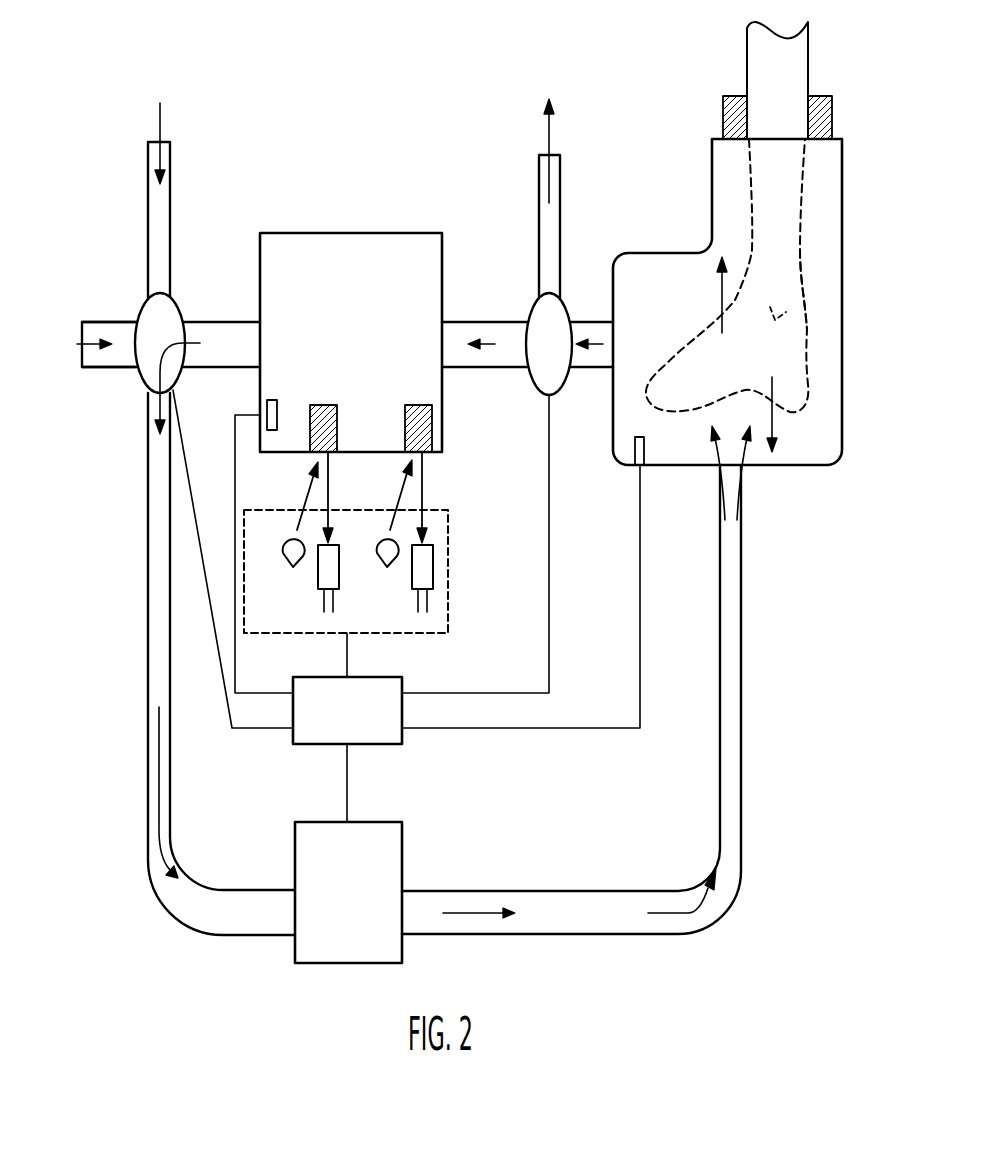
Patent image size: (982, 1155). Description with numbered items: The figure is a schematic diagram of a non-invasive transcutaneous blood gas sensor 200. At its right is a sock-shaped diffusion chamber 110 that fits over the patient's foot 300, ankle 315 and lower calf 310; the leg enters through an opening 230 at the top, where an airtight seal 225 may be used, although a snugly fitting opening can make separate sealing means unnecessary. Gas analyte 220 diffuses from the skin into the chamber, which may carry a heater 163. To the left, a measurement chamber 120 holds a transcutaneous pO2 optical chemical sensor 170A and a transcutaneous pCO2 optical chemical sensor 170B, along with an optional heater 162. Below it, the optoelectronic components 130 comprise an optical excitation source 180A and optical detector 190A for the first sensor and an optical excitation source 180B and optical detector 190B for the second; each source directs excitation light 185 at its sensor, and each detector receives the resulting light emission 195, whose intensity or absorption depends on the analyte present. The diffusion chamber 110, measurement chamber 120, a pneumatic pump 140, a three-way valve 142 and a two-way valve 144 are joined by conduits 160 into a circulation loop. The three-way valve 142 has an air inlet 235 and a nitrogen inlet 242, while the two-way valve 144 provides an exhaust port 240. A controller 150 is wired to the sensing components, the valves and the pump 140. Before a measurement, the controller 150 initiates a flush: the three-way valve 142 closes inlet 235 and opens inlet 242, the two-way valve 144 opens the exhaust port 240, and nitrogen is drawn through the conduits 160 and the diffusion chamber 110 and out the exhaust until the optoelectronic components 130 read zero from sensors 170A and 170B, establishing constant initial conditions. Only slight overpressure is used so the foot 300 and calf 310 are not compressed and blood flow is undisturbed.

The non-invasive transcutaneous blood gas sensor 200 is at (311, 62).
The diffusion chamber 110 is at (798, 465).
The measurement chamber 120 is at (410, 233).
The optoelectronic components 130 is at (448, 575).
The pneumatic pump 140 is at (295, 852).
The three-way valve 142 is at (143, 307).
The two-way valve 144 is at (553, 388).
The controller 150 is at (404, 744).
The conduits 160 is at (216, 322).
The heater 162 is at (278, 414).
The heater 163 is at (644, 450).
The transcutaneous pO2 optical chemical sensor 170A is at (322, 405).
The transcutaneous pCO2 optical chemical sensor 170B is at (405, 428).
The optical excitation source 180A is at (283, 565).
The optical excitation source 180B is at (377, 565).
The excitation light 185 is at (309, 490).
The optical detector 190A is at (313, 562).
The optical detector 190B is at (407, 562).
The light emission 195 is at (330, 488).
The gas analyte 220 is at (720, 289).
The airtight seal 225 is at (723, 112).
The opening 230 is at (746, 79).
The inlet 235 is at (148, 197).
The exhaust port 240 is at (539, 262).
The inlet 242 is at (97, 321).
The foot 300 is at (641, 346).
The lower calf 310 is at (747, 204).
The ankle 315 is at (792, 337).